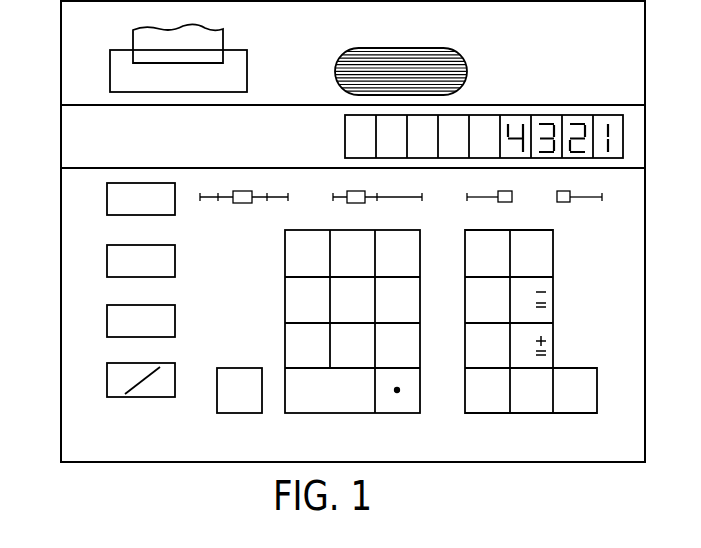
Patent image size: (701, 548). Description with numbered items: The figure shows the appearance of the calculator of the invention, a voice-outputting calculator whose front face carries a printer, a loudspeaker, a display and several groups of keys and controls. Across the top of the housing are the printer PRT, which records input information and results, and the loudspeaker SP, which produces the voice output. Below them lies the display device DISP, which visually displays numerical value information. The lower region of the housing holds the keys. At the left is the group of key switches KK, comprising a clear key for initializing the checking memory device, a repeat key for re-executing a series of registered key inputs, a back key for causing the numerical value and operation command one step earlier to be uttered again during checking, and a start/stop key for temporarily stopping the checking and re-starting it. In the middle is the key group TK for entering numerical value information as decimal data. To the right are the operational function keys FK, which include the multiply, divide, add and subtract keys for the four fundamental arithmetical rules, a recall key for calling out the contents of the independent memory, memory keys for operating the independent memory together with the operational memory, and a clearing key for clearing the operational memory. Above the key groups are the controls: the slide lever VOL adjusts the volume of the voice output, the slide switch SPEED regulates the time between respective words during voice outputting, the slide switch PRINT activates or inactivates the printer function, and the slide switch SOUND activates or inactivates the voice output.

The printer PRT is at (178, 58).
The loudspeaker SP is at (401, 59).
The display device DISP is at (357, 148).
The group of key switches KK is at (103, 400).
The key group for entering numerical value information TK is at (425, 422).
The operational function keys FK is at (460, 422).
The slide lever VOL is at (244, 187).
The slide switch SPEED is at (375, 199).
The slide switch PRINT is at (493, 199).
The slide switch SOUND is at (584, 199).